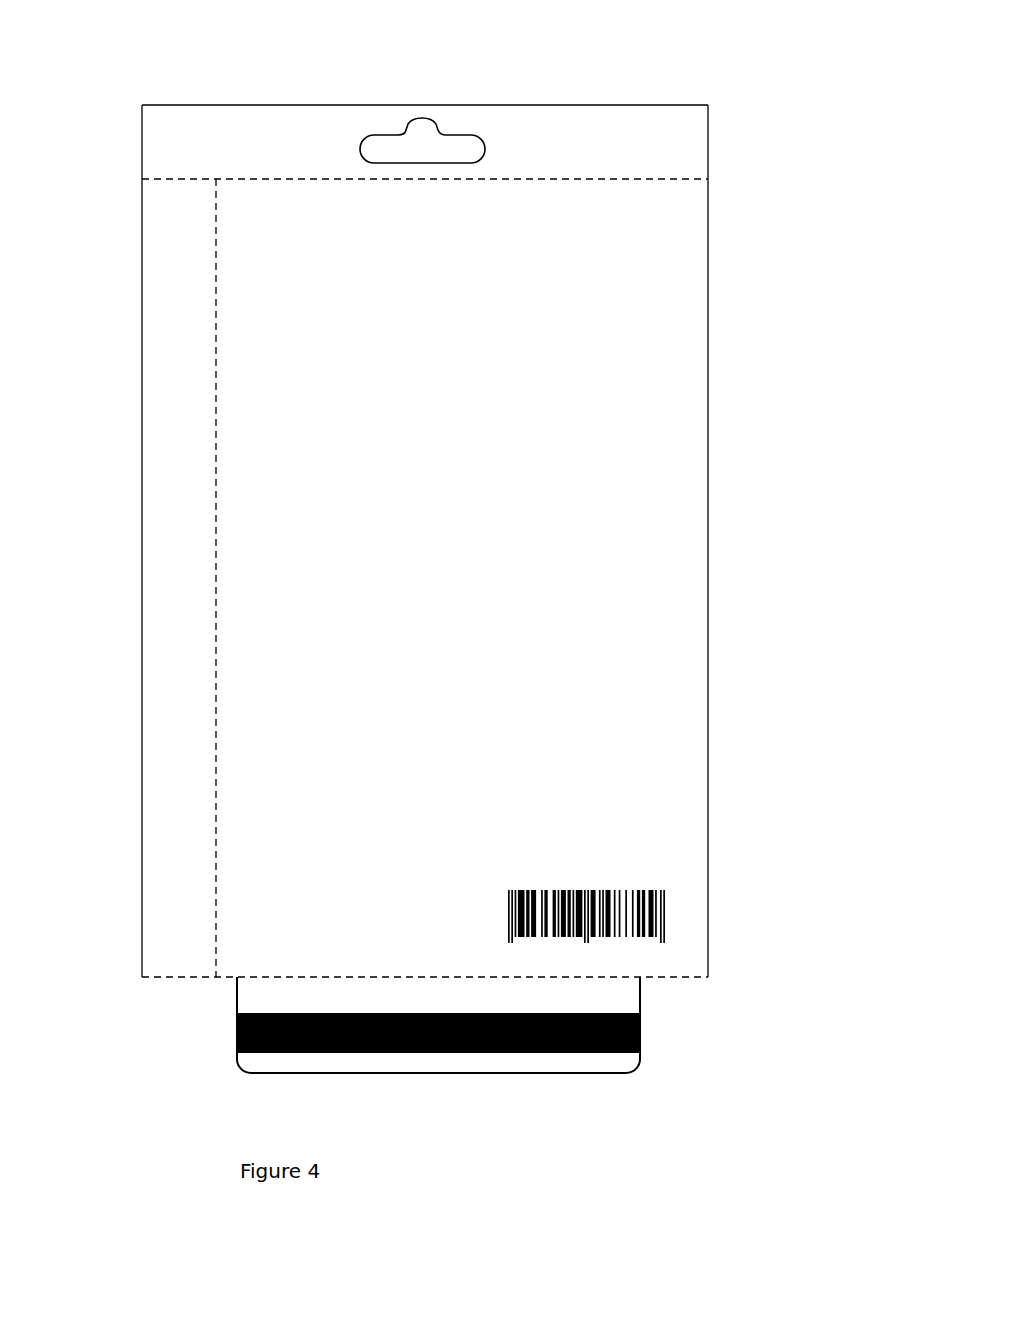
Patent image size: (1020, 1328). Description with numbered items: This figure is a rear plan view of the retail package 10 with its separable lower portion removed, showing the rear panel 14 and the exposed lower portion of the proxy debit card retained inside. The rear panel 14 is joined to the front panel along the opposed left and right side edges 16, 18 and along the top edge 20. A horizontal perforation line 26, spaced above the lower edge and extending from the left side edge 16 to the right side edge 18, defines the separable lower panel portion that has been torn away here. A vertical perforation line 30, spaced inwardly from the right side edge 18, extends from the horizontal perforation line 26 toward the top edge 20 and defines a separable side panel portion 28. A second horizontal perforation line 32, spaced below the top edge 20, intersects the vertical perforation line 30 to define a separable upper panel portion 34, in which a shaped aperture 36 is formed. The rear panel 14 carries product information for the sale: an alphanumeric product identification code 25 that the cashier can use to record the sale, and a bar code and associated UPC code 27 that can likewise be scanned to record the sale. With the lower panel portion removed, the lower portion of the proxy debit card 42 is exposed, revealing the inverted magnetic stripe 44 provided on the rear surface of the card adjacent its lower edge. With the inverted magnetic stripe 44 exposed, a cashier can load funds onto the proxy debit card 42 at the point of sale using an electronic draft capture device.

The retail package 10 is at (775, 240).
The rear panel 14 is at (457, 365).
The left side edge 16 is at (709, 480).
The right side edge 18 is at (141, 343).
The top edge 20 is at (640, 104).
The alphanumeric product identification code 25 is at (255, 940).
The horizontal perforation line 26 is at (193, 980).
The bar code and associated UPC code 27 is at (666, 888).
The separable side panel portion 28 is at (187, 580).
The vertical perforation line 30 is at (215, 512).
The second horizontal perforation line 32 is at (245, 178).
The separable upper panel portion 34 is at (604, 156).
The shaped aperture 36 is at (436, 119).
The proxy debit card 42 is at (538, 1060).
The inverted magnetic stripe 44 is at (610, 1050).